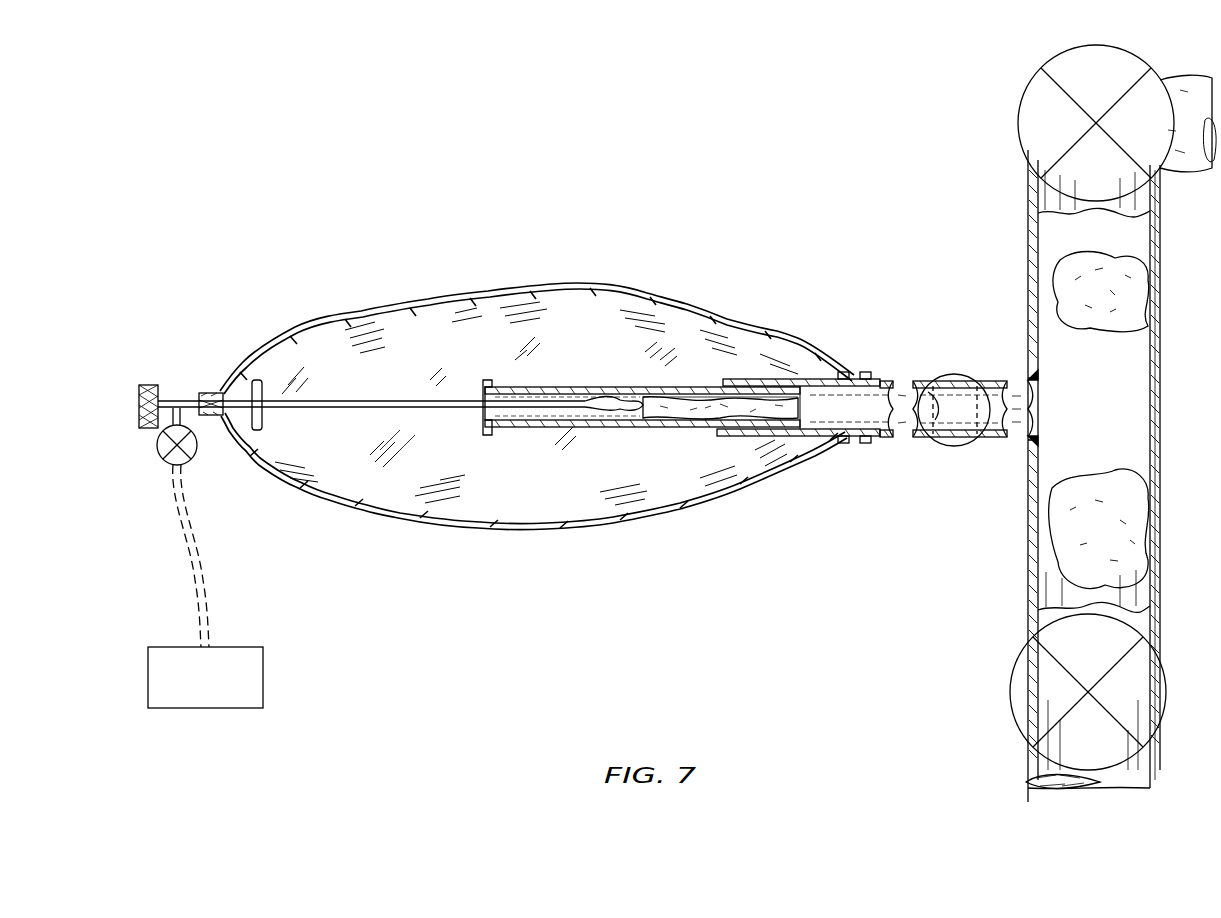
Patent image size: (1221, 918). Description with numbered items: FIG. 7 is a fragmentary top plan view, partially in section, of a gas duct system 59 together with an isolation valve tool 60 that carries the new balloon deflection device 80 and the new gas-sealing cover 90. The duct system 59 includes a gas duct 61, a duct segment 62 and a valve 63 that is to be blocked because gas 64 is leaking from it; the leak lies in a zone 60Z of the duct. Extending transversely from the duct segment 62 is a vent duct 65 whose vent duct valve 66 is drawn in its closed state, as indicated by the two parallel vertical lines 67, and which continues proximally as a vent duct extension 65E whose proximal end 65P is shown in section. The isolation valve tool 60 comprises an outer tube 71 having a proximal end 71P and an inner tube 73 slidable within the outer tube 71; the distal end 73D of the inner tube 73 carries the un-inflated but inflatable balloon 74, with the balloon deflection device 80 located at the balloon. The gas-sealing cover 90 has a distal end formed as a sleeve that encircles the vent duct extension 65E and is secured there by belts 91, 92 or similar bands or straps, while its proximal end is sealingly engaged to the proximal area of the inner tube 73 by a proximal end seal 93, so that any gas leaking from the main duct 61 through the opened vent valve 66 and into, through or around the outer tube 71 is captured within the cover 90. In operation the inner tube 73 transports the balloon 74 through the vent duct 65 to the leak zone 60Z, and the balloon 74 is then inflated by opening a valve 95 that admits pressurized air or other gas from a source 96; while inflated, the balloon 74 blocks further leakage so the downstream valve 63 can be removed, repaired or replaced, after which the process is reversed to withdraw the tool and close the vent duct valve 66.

The gas duct system 59 is at (952, 158).
The isolation valve tool 60 is at (573, 336).
The zone of gas leak 60Z is at (1062, 445).
The gas duct 61 is at (1160, 478).
The duct segment 62 is at (1028, 498).
The valve to be blocked 63 is at (1022, 692).
The gas leaking from valve 64 is at (1068, 560).
The vent duct 65 is at (1010, 383).
The vent duct extension 65E is at (752, 437).
The proximal end of vent duct 65P is at (725, 436).
The vent duct valve 66 is at (964, 376).
The parallel lines of vent duct valve 67 is at (940, 418).
The outer tube 71 is at (540, 386).
The proximal end of outer tube 71P is at (486, 380).
The inner tube 73 is at (397, 402).
The distal end of inner tube 73D is at (625, 410).
The inflatable balloon 74 is at (705, 395).
The balloon deflection device 80 is at (648, 386).
The sealing cover 90 is at (487, 292).
The belt 91 is at (866, 445).
The belt 92 is at (843, 445).
The proximal end seal for cover 93 is at (215, 396).
The valve 95 is at (188, 458).
The source of compressed gas 96 is at (240, 700).